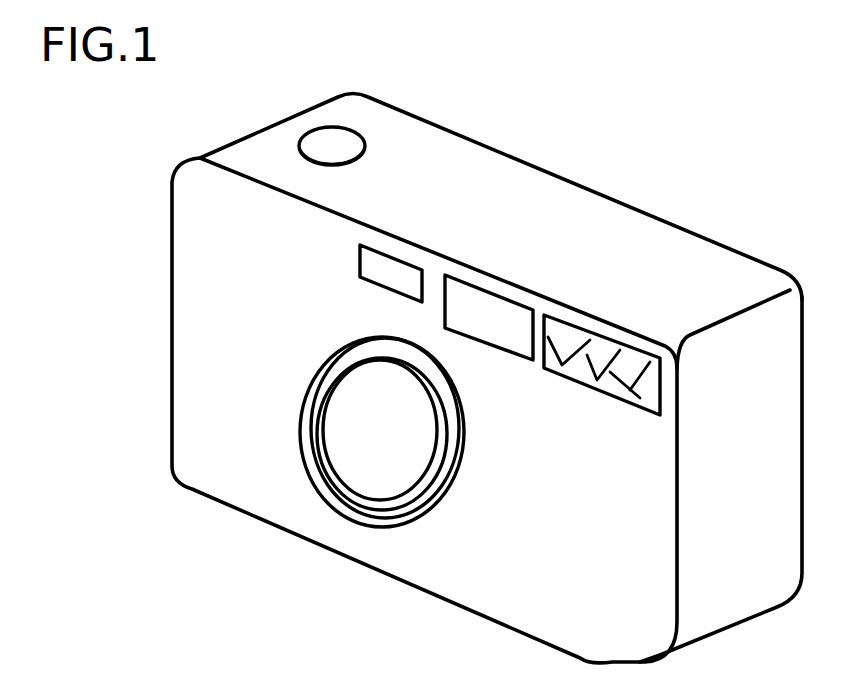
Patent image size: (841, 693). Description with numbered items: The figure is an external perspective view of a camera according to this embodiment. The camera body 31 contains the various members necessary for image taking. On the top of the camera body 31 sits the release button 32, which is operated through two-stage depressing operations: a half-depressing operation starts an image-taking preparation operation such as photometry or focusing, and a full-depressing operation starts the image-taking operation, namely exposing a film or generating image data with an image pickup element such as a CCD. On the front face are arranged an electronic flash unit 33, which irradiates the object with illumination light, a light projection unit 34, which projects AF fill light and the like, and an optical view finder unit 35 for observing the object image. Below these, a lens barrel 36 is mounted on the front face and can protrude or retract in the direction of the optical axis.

The camera body 31 is at (668, 222).
The release button 32 is at (328, 137).
The electronic flash unit 33 is at (572, 335).
The light projection unit 34 is at (464, 307).
The optical view finder unit 35 is at (375, 262).
The lens barrel 36 is at (355, 512).